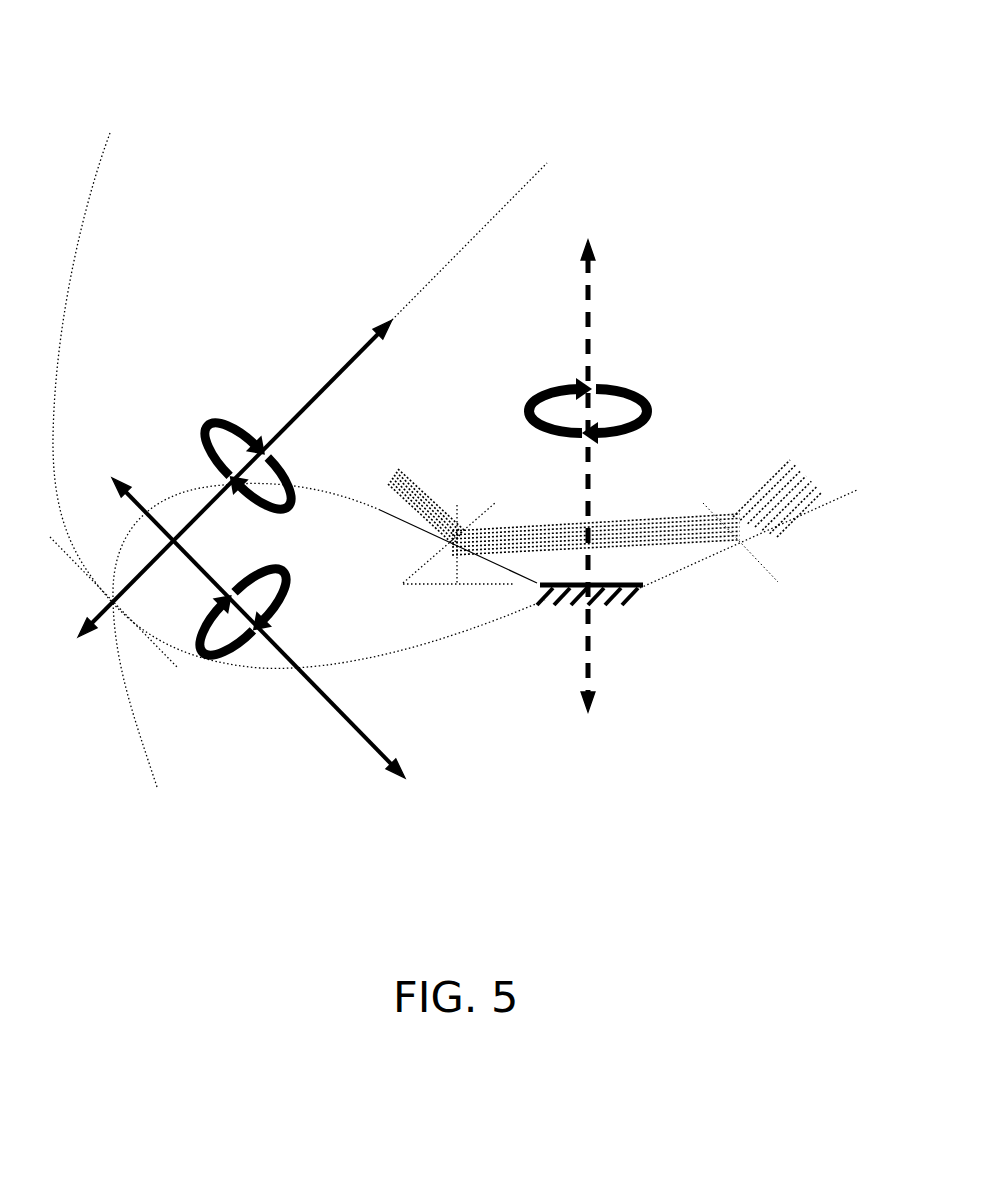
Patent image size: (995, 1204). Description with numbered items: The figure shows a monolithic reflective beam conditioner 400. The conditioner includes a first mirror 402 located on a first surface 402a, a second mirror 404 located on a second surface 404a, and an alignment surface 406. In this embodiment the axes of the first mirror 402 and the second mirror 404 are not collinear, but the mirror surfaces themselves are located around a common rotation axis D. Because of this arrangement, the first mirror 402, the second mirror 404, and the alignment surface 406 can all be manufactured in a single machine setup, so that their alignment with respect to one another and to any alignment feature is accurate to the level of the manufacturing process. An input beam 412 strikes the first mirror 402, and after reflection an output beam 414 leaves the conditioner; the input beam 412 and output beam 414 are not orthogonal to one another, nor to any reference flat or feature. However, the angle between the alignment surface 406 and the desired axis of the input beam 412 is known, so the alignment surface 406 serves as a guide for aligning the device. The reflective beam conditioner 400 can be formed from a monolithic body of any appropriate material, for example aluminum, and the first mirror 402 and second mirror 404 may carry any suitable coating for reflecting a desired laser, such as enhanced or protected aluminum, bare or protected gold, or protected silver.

The reflective beam conditioner 400 is at (82, 84).
The first mirror 402 is at (458, 611).
The first surface 402a is at (246, 635).
The second mirror 404 is at (748, 603).
The second surface 404a is at (299, 400).
The alignment surface 406 is at (572, 659).
The input beam 412 is at (437, 458).
The output beam 414 is at (763, 457).
The common rotation axis D is at (610, 476).